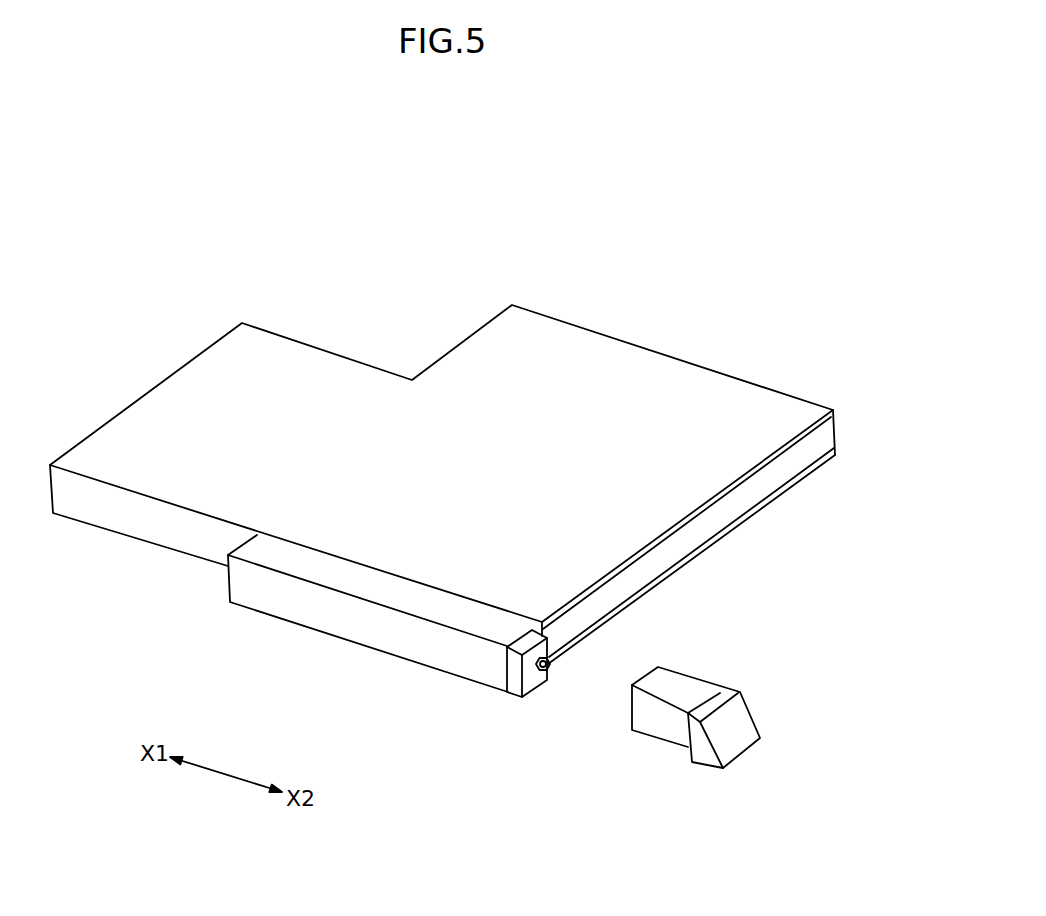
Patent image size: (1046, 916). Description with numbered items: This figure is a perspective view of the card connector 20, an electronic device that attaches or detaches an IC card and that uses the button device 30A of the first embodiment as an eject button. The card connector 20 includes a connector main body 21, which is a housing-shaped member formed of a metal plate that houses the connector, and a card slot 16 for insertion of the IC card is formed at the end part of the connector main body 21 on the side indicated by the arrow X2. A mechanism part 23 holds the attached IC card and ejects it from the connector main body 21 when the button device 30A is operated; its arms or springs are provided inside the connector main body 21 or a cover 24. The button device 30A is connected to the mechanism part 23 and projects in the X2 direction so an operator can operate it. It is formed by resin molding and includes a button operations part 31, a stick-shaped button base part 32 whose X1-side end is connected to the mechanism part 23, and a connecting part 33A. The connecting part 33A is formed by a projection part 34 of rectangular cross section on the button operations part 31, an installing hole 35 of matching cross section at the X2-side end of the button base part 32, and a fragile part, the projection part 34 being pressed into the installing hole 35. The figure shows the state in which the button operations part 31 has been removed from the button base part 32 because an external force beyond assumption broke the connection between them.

The card connector 20 is at (106, 297).
The connector main body 21 is at (601, 355).
The card slot 16 is at (713, 522).
The mechanism part 23 is at (300, 610).
The cover 24 is at (393, 632).
The button device 30A is at (470, 704).
The button operations part 31 is at (743, 725).
The button base part 32 is at (516, 700).
The connecting part 33A is at (667, 785).
The projection part 34 is at (555, 668).
The installing hole 35 is at (545, 680).